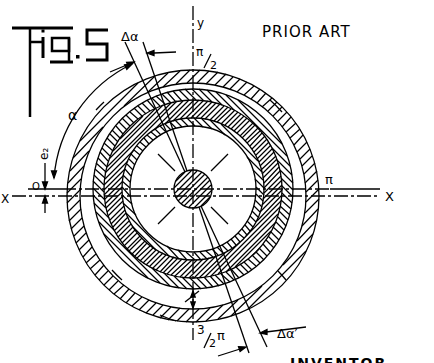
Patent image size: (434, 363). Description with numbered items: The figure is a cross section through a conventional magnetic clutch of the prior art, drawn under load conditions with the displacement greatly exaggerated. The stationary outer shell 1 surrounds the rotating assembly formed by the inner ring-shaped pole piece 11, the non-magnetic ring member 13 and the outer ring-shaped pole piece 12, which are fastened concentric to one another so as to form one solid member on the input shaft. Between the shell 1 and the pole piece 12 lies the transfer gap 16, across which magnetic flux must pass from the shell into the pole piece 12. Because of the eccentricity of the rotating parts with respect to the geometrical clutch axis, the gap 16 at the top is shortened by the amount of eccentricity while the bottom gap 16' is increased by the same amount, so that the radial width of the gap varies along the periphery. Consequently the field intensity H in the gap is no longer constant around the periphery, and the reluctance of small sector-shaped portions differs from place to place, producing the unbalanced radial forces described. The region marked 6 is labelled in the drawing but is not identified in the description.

The outer shell 1 is at (260, 90).
The housing 6 is at (81, 101).
The pole piece 11 is at (262, 178).
The pole piece 12 is at (272, 135).
The ring member 13 is at (279, 160).
The transfer gap 16 is at (193, 179).
The transfer gap (bottom portion) 16' is at (157, 335).
The field intensity H is at (280, 104).